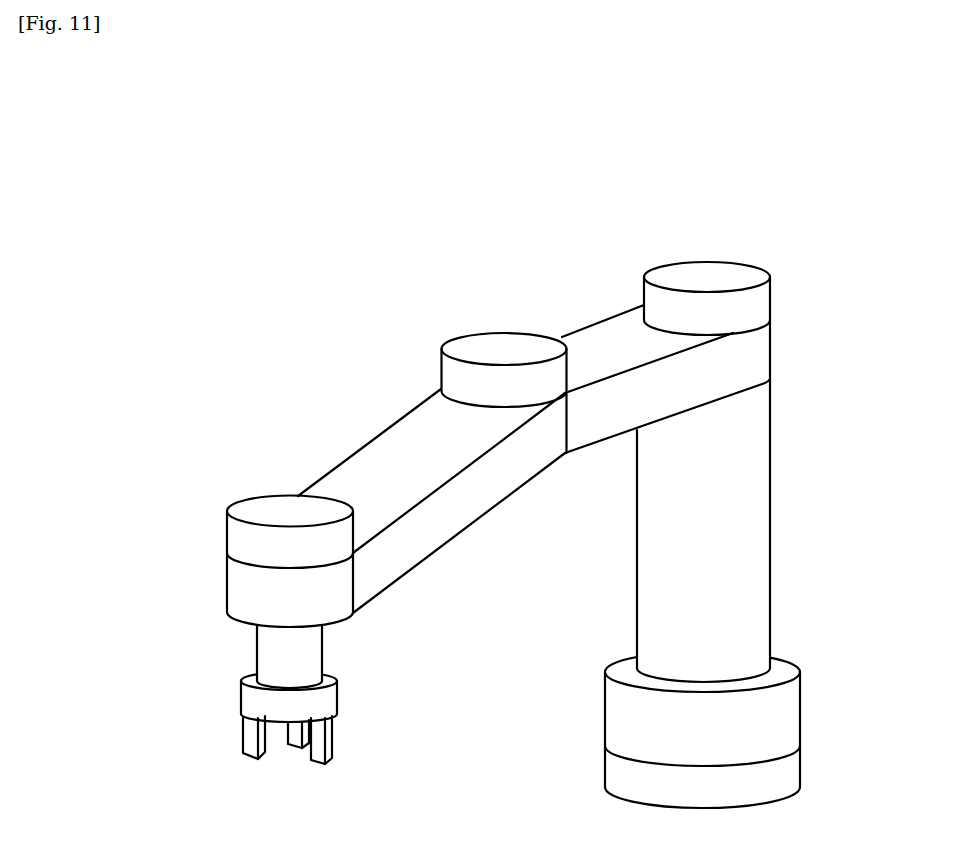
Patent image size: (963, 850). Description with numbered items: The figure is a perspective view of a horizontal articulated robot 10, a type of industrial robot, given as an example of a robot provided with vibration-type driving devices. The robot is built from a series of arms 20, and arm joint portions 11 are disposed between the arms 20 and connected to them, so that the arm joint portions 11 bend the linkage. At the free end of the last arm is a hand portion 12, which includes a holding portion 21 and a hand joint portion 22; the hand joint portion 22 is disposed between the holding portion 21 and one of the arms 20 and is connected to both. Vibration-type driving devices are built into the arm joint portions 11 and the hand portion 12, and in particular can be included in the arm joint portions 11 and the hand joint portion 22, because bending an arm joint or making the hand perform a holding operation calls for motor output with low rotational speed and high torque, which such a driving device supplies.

The horizontal articulated robot 10 is at (259, 356).
The arm joint portions 11 is at (754, 299).
The hand portion 12 is at (390, 727).
The arms 20 is at (585, 345).
The holding portion 21 is at (248, 745).
The hand joint portion 22 is at (257, 700).